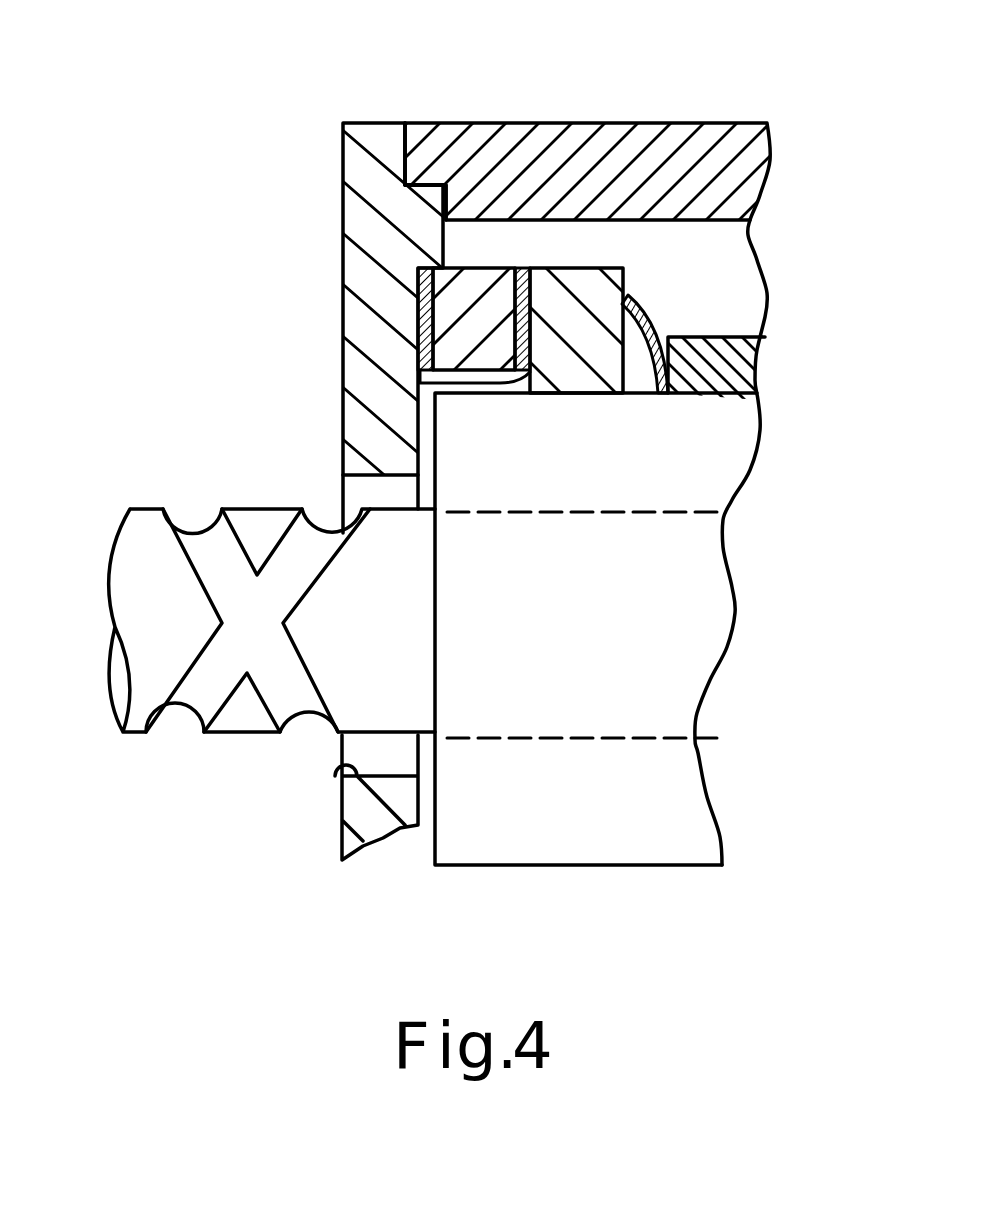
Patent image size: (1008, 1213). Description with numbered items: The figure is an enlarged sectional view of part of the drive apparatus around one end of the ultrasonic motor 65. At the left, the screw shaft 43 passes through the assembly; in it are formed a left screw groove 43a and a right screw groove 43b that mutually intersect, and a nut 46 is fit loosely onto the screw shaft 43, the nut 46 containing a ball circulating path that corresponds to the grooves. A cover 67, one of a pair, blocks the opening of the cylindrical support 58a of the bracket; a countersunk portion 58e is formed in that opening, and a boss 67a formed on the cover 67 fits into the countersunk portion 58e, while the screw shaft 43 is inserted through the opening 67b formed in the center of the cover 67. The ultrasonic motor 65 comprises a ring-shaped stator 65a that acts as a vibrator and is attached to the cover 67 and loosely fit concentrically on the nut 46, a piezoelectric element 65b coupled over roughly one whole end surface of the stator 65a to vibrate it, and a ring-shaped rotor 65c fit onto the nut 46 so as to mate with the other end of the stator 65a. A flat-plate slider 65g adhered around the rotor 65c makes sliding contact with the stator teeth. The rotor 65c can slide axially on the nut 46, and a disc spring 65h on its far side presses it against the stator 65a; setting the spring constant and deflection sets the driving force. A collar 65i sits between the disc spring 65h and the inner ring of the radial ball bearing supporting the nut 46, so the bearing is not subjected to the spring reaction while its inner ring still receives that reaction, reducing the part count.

The screw shaft 43 is at (246, 651).
The left screw groove 43a is at (200, 540).
The right screw groove 43b is at (193, 703).
The nut 46 is at (422, 840).
The cylindrical support 58a is at (730, 180).
The countersunk portion 58e is at (440, 183).
The ultrasonic motor 65 is at (549, 240).
The stator 65a is at (448, 305).
The piezoelectric element 65b is at (420, 345).
The rotor 65c is at (567, 283).
The slider 65g is at (420, 383).
The disc spring 65h is at (628, 298).
The collar 65i is at (732, 350).
The cover 67 is at (353, 457).
The boss 67a is at (412, 207).
The opening 67b is at (335, 764).